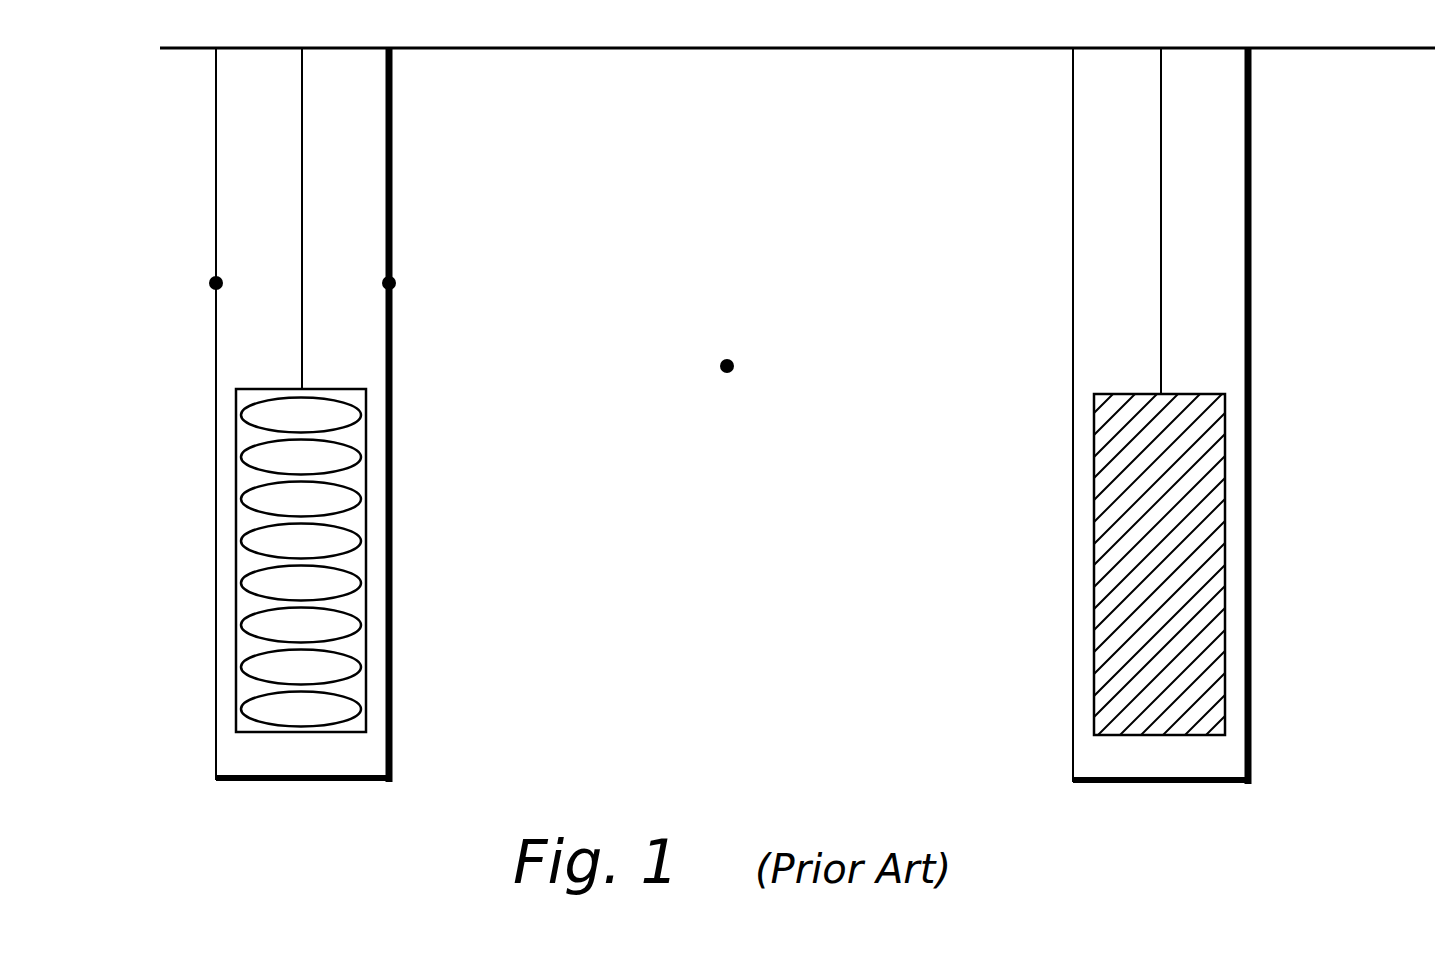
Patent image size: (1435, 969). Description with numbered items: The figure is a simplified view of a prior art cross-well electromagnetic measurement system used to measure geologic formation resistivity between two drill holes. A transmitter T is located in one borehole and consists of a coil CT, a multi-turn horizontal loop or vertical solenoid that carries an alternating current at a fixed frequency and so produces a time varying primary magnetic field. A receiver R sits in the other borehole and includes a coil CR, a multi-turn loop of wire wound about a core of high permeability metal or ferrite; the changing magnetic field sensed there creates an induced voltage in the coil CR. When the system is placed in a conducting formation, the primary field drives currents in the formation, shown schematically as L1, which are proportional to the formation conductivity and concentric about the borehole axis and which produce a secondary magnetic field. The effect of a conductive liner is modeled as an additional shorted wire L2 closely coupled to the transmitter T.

The transmitter T is at (405, 391).
The transmitter coil CT is at (366, 520).
The shorted wire L2 is at (393, 283).
The currents L1 is at (750, 390).
The receiver R is at (1263, 392).
The receiver coil CR is at (1226, 525).